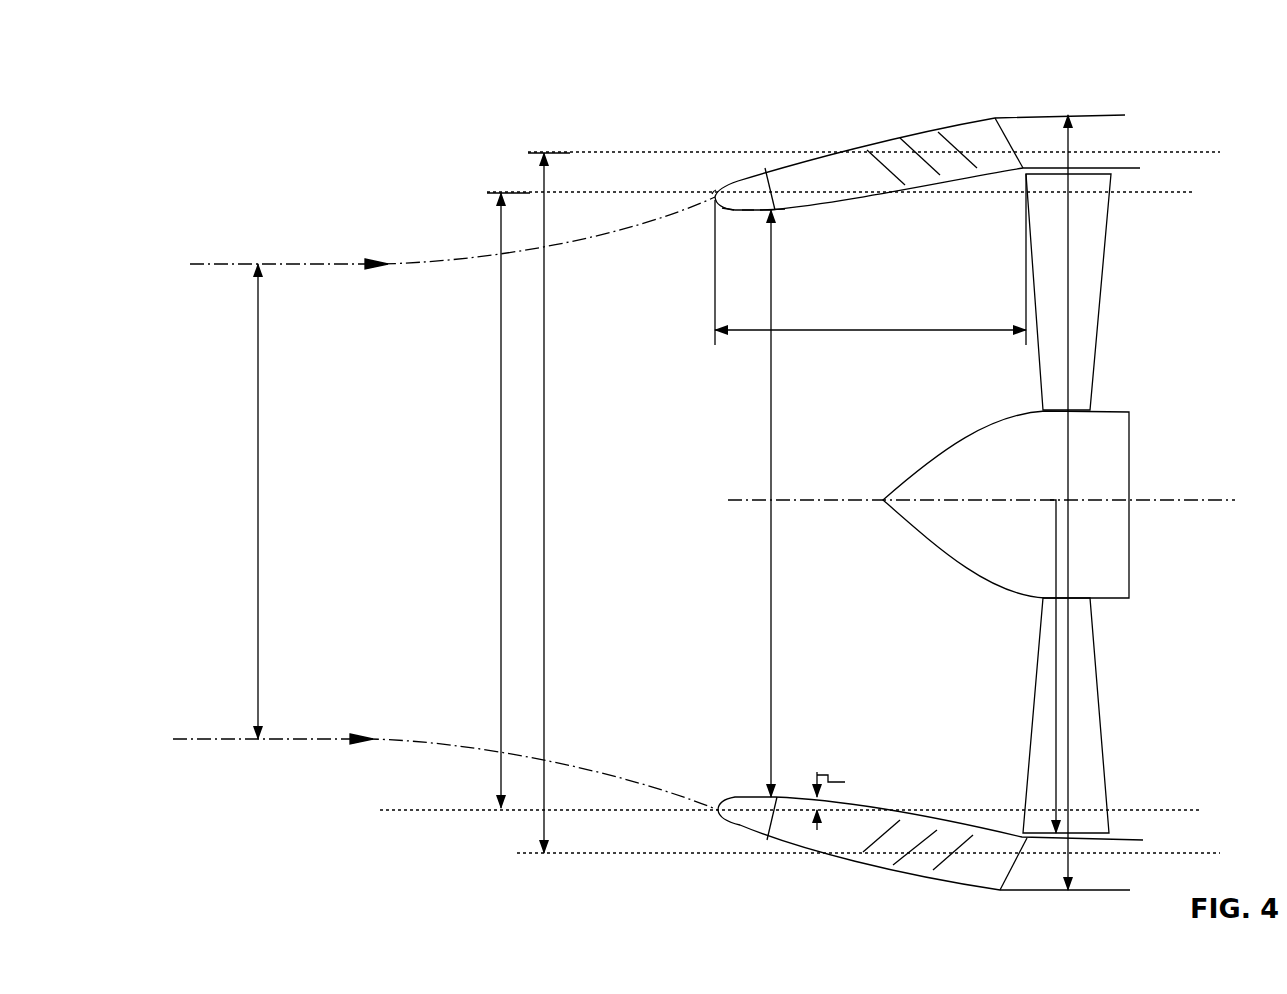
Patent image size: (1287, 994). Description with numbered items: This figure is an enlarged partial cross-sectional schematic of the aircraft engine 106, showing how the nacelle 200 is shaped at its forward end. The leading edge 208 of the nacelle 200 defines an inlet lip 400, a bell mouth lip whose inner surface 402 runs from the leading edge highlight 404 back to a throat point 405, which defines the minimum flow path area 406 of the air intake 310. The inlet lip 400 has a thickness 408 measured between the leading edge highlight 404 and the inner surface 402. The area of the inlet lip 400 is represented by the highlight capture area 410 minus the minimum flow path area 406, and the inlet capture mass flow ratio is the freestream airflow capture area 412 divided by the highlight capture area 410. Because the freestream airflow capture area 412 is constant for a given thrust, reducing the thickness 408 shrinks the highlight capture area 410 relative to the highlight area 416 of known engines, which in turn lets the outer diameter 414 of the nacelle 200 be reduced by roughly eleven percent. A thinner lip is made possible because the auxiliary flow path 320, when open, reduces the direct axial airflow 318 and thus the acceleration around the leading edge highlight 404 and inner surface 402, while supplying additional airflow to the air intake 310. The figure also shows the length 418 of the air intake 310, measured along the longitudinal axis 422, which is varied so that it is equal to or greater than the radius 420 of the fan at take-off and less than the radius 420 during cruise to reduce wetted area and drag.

The aircraft engine 106 is at (376, 118).
The nacelle 200 is at (843, 83).
The leading edge 208 is at (740, 172).
The air intake 310 is at (690, 447).
The direct axial airflow 318 is at (930, 400).
The auxiliary flow path 320 is at (950, 105).
The inlet lip 400 is at (728, 212).
The inner surface 402 is at (748, 211).
The leading edge highlight 404 is at (705, 192).
The throat point 405 is at (773, 210).
The minimum flow path area 406 is at (771, 653).
The thickness 408 is at (853, 801).
The highlight capture area 410 is at (501, 459).
The freestream airflow capture area 412 is at (258, 531).
The outer diameter 414 is at (1069, 443).
The highlight area 416 is at (545, 364).
The length 418 is at (870, 332).
The radius 420 is at (1056, 697).
The longitudinal axis 422 is at (728, 500).